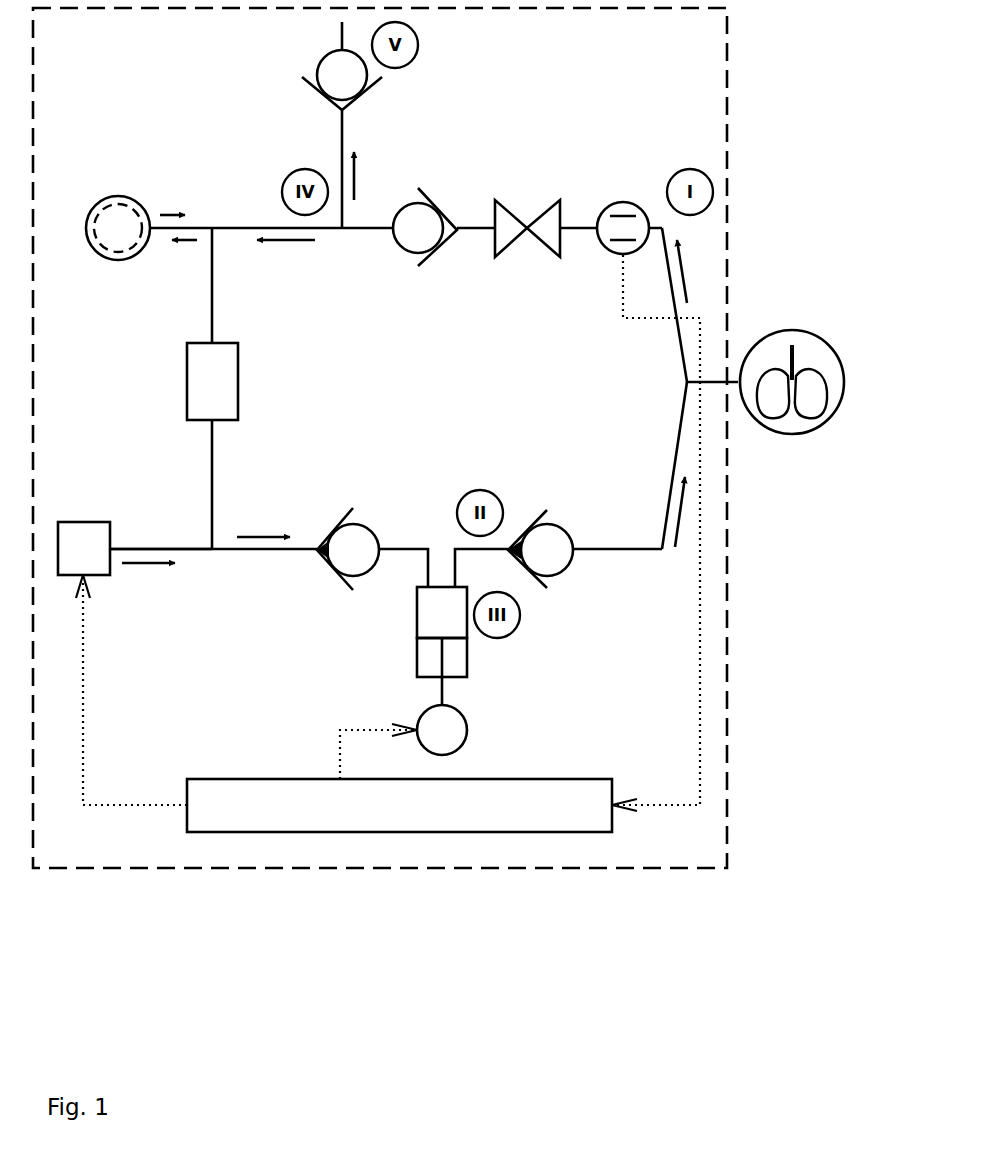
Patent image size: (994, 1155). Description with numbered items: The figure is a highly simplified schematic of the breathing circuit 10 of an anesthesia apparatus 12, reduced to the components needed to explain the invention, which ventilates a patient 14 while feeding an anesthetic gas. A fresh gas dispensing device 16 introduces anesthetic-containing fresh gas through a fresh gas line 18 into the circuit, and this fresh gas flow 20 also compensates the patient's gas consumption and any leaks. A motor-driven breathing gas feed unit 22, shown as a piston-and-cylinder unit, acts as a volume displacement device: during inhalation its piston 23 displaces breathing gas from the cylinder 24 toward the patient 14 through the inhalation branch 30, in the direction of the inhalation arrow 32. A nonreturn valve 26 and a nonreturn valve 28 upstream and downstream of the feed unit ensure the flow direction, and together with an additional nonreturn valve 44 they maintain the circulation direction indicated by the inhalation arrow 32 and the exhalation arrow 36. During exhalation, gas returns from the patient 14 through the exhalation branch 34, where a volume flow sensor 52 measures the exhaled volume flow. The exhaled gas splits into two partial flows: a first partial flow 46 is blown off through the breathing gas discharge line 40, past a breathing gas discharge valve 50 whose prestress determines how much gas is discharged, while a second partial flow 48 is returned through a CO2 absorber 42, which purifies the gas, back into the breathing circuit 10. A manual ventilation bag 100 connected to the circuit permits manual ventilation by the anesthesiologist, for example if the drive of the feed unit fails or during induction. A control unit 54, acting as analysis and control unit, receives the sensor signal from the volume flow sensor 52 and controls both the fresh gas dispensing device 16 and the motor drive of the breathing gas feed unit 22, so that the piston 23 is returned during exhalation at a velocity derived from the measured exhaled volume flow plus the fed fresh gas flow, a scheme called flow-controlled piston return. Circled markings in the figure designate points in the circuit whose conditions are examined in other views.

The breathing circuit 10 is at (232, 228).
The anesthesia apparatus 12 is at (313, 872).
The patient 14 is at (800, 330).
The fresh gas dispensing device 16 is at (98, 577).
The fresh gas line 18 is at (158, 547).
The fresh gas flow 20 is at (152, 565).
The breathing gas feed unit 22 is at (451, 671).
The piston 23 is at (430, 643).
The cylinder 24 is at (417, 600).
The nonreturn valve 26 is at (363, 522).
The nonreturn valve 28 is at (557, 523).
The inhalation branch 30 is at (673, 458).
The inhalation arrow 32 is at (682, 513).
The exhalation branch 34 is at (680, 342).
The exhalation arrow 36 is at (687, 277).
The breathing gas discharge line 40 is at (340, 152).
The CO2 absorber 42 is at (187, 375).
The additional nonreturn valve 44 is at (403, 253).
The first partial flow 46 is at (353, 172).
The second partial flow 48 is at (290, 250).
The breathing gas discharge valve 50 is at (300, 62).
The volume flow sensor 52 is at (633, 202).
The control unit 54 is at (458, 833).
The manual ventilation bag 100 is at (120, 195).